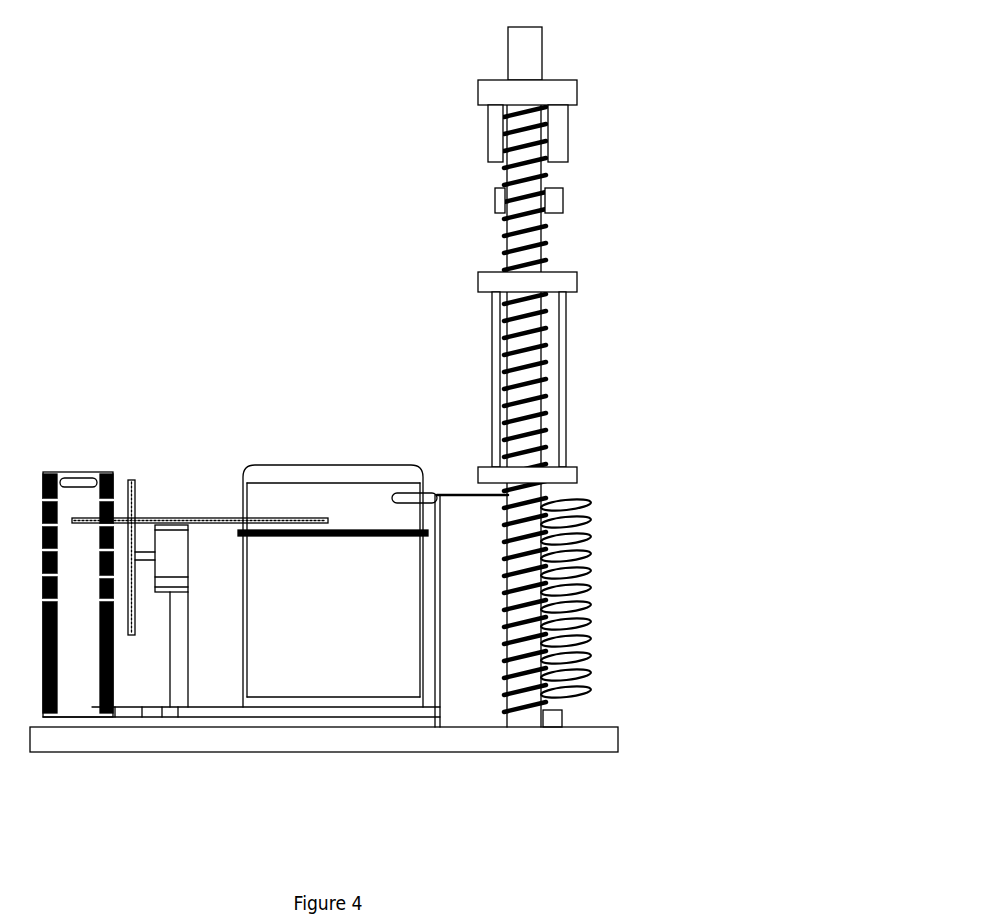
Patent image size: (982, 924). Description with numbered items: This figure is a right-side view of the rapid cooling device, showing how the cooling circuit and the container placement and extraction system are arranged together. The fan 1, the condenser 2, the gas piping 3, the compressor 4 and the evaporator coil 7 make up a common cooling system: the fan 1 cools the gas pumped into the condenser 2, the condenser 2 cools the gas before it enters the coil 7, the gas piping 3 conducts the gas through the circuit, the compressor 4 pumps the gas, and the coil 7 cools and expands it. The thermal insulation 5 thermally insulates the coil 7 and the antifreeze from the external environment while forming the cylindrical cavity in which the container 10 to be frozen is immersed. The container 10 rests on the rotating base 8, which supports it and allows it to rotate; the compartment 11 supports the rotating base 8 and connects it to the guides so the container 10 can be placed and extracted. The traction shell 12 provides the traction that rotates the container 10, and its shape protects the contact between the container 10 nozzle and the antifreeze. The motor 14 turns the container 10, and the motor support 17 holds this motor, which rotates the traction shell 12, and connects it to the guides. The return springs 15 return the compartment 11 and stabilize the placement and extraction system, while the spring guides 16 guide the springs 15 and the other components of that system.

The fan 1 is at (172, 548).
The condenser 2 is at (75, 472).
The gas piping 3 is at (210, 712).
The compressor 4 is at (318, 652).
The thermal insulation 5 is at (487, 685).
The evaporator coil 7 is at (588, 618).
The rotating base 8 is at (565, 457).
The container 10 is at (567, 370).
The compartment 11 is at (498, 282).
The traction shell 12 is at (495, 202).
The motor 14 is at (485, 128).
The return springs 15 is at (547, 237).
The spring guides 16 is at (508, 40).
The motor support 17 is at (563, 90).